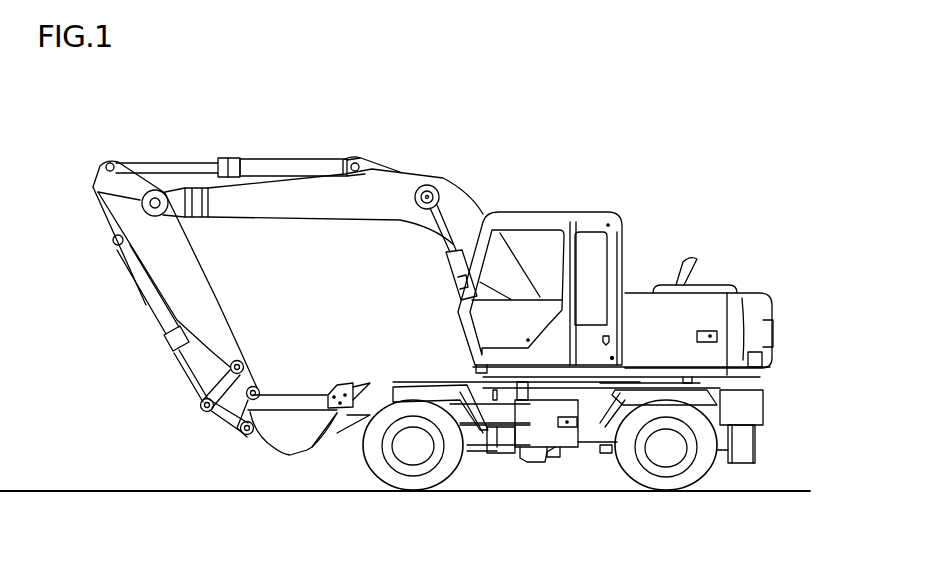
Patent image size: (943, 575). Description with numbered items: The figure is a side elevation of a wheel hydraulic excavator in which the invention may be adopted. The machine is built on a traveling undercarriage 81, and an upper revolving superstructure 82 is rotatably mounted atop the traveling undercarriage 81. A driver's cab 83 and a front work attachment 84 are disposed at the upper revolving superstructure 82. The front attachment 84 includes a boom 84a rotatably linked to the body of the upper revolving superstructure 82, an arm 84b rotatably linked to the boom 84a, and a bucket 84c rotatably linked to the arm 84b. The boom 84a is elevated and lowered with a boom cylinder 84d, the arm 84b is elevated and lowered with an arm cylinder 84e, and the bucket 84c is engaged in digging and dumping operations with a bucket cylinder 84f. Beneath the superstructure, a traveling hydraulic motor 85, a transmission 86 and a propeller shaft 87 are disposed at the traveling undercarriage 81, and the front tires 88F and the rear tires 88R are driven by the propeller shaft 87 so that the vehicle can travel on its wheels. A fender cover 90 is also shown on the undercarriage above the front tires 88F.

The traveling undercarriage 81 is at (766, 452).
The upper revolving superstructure 82 is at (727, 278).
The driver's cab 83 is at (556, 210).
The front work attachment 84 is at (419, 141).
The boom 84a is at (330, 208).
The arm 84b is at (186, 253).
The bucket 84c is at (293, 403).
The boom cylinder 84d is at (452, 243).
The arm cylinder 84e is at (274, 162).
The bucket cylinder 84f is at (152, 310).
The traveling hydraulic motor 85 is at (498, 457).
The transmission 86 is at (534, 453).
The propeller shaft 87 is at (475, 450).
The front tires 88F is at (376, 470).
The rear tires 88R is at (658, 487).
The fender cover 90 is at (444, 382).